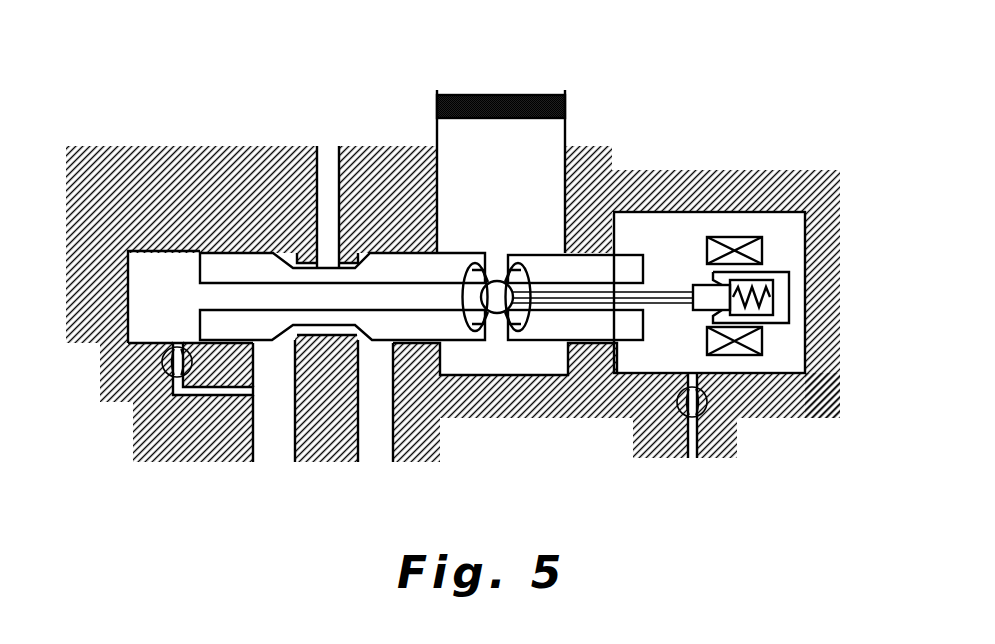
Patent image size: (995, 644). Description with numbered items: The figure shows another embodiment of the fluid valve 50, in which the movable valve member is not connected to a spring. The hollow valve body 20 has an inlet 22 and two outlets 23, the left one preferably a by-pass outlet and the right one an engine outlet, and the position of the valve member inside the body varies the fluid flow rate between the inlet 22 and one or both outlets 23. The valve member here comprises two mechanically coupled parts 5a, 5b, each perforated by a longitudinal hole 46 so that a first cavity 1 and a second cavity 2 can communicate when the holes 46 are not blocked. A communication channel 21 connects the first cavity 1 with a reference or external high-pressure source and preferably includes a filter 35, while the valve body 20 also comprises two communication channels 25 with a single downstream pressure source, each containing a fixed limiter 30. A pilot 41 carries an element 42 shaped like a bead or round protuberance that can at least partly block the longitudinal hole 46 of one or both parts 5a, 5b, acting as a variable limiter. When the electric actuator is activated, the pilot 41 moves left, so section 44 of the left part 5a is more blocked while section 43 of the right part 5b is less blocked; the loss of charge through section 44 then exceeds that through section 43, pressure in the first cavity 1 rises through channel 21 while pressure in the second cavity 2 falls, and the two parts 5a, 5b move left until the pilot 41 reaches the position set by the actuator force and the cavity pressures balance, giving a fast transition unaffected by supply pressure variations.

The fluid valve 50 is at (163, 104).
The valve body 20 is at (737, 197).
The left part of valve member 5a is at (253, 268).
The right part of valve member 5b is at (596, 268).
The inlet 22 is at (328, 164).
The communication channel 21 is at (503, 75).
The filter 35 is at (480, 108).
The section of left part 44 is at (470, 275).
The section of right part 43 is at (522, 277).
The element in the shape of a bead 42 is at (502, 300).
The longitudinal hole 46 is at (389, 292).
The second cavity 2 is at (165, 315).
The first cavity 1 is at (792, 255).
The pilot 41 is at (655, 297).
The fixed limiter 30 is at (165, 365).
The communication channel 25 is at (211, 390).
The outlet 23 is at (274, 405).